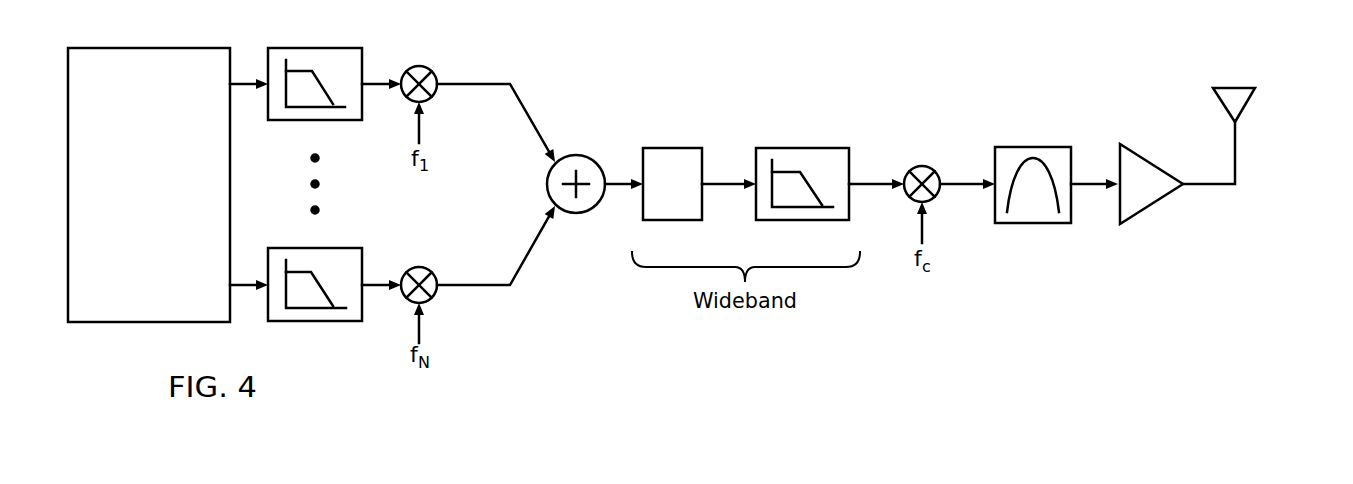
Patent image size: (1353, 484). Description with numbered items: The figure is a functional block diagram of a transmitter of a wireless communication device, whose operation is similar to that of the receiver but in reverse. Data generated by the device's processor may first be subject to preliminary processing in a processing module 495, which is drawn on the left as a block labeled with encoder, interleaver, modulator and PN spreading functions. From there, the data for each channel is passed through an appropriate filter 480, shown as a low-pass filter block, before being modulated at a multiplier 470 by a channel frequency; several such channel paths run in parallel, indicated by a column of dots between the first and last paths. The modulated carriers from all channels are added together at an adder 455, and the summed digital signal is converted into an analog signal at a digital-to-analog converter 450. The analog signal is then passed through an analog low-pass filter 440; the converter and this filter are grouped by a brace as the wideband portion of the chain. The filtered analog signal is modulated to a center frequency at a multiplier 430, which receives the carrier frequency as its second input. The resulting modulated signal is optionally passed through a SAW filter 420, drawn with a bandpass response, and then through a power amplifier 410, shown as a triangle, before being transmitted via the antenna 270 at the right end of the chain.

The processing module 495 is at (162, 48).
The filter 480 is at (308, 48).
The multiplier 470 is at (421, 66).
The adder 455 is at (577, 155).
The digital-to-analog converter 450 is at (673, 220).
The analog low-pass filter 440 is at (795, 220).
The multiplier 430 is at (922, 166).
The SAW filter 420 is at (1028, 223).
The power amplifier 410 is at (1150, 205).
The antenna 270 is at (1235, 137).